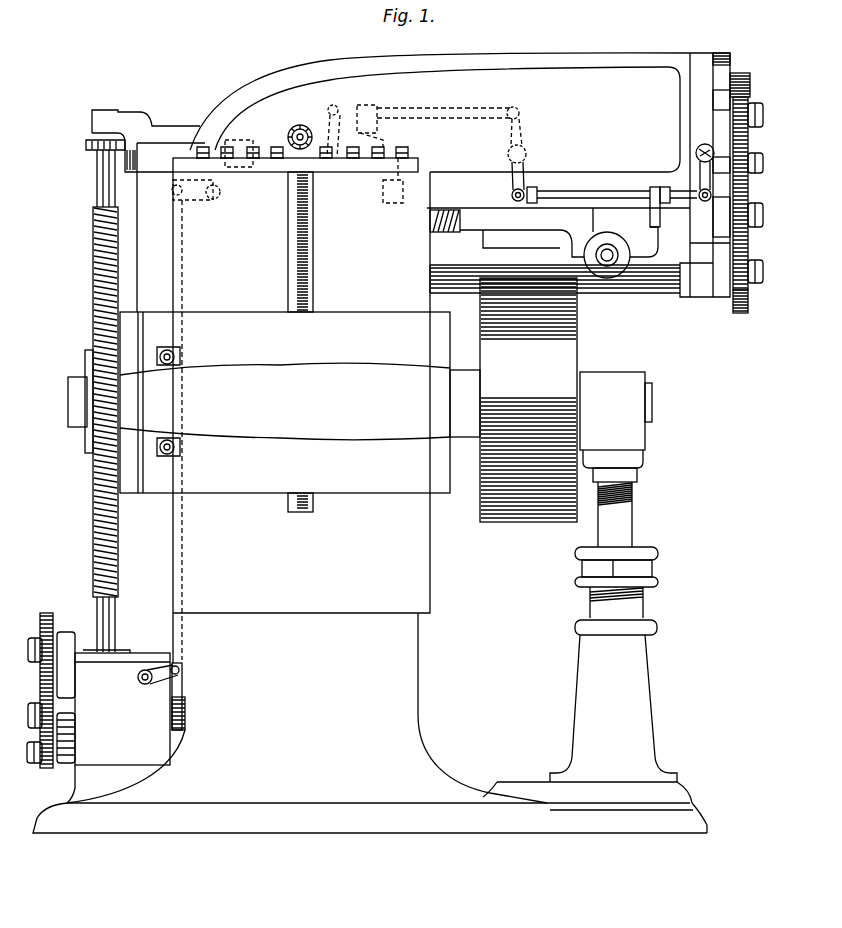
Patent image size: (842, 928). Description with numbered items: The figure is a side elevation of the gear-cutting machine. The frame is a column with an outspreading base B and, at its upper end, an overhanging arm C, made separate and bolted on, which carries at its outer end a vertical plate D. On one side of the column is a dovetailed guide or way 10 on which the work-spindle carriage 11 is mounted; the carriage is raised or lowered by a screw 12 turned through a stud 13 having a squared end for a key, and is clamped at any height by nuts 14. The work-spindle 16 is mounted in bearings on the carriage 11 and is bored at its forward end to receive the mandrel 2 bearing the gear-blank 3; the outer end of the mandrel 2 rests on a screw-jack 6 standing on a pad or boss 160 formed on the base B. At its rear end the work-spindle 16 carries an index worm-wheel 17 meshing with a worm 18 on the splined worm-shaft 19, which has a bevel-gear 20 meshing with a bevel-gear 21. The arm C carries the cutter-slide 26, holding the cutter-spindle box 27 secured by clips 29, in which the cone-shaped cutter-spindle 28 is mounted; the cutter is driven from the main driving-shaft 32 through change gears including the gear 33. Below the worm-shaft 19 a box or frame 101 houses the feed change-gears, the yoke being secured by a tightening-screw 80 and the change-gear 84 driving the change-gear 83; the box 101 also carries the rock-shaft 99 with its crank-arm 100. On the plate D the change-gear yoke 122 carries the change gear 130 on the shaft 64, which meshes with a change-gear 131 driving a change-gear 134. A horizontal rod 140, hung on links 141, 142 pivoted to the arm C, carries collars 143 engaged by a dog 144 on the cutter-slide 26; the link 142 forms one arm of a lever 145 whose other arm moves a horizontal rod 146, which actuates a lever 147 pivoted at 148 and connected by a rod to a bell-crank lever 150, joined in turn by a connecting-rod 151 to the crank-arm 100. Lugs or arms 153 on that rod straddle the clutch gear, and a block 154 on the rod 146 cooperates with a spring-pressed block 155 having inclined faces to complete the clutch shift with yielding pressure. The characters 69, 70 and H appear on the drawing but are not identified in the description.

The mandrel 2 is at (650, 392).
The gear-blank 3 is at (558, 390).
The screw-jack 6 is at (615, 619).
The dovetailed guide or way 10 is at (283, 405).
The work-spindle carriage 11 is at (285, 402).
The screw 12 is at (308, 216).
The stud 13 is at (289, 140).
The nuts 14 is at (175, 357).
The work-spindle 16 is at (470, 437).
The index worm-wheel 17 is at (93, 290).
The worm 18 is at (85, 360).
The splined worm-shaft 19 is at (97, 185).
The bevel-gear 20 is at (88, 147).
The bevel-gear 21 is at (124, 173).
The cutter-slide 26 is at (558, 232).
The cutter-spindle box 27 is at (593, 262).
The cone-shaped cutter-spindle 28 is at (611, 262).
The clips 29 is at (568, 258).
The main driving-shaft 32 is at (477, 269).
The gear 33 is at (748, 308).
The shaft 64 is at (452, 233).
The rod 69 is at (183, 690).
The sleeve 70 is at (190, 708).
The tightening-screw 80 is at (47, 762).
The change-gear 83 is at (40, 628).
The change-gear 84 is at (40, 693).
The rock-shaft 99 is at (138, 680).
The crank-arm 100 is at (158, 684).
The box or frame 101 is at (122, 707).
The change-gear yoke 122 is at (724, 70).
The change gear 130 is at (748, 253).
The change-gear 131 is at (748, 193).
The change-gear 134 is at (750, 92).
The horizontal rod 140 is at (605, 190).
The link 141 is at (700, 172).
The link 142 is at (525, 176).
The collars 143 is at (540, 192).
The dog 144 is at (655, 206).
The lever 145 is at (521, 149).
The horizontal rod 146 is at (448, 103).
The lever 147 is at (346, 160).
The pivot 148 is at (319, 130).
The bell-crank lever 150 is at (220, 191).
The link or connecting-rod 151 is at (182, 258).
The lugs or arms 153 is at (243, 147).
The block 154 is at (380, 109).
The block 155 is at (386, 129).
The pad or boss 160 is at (595, 795).
The base B is at (370, 818).
The overhanging arm C is at (440, 112).
The vertical plate D is at (705, 175).
The frame body H is at (307, 708).